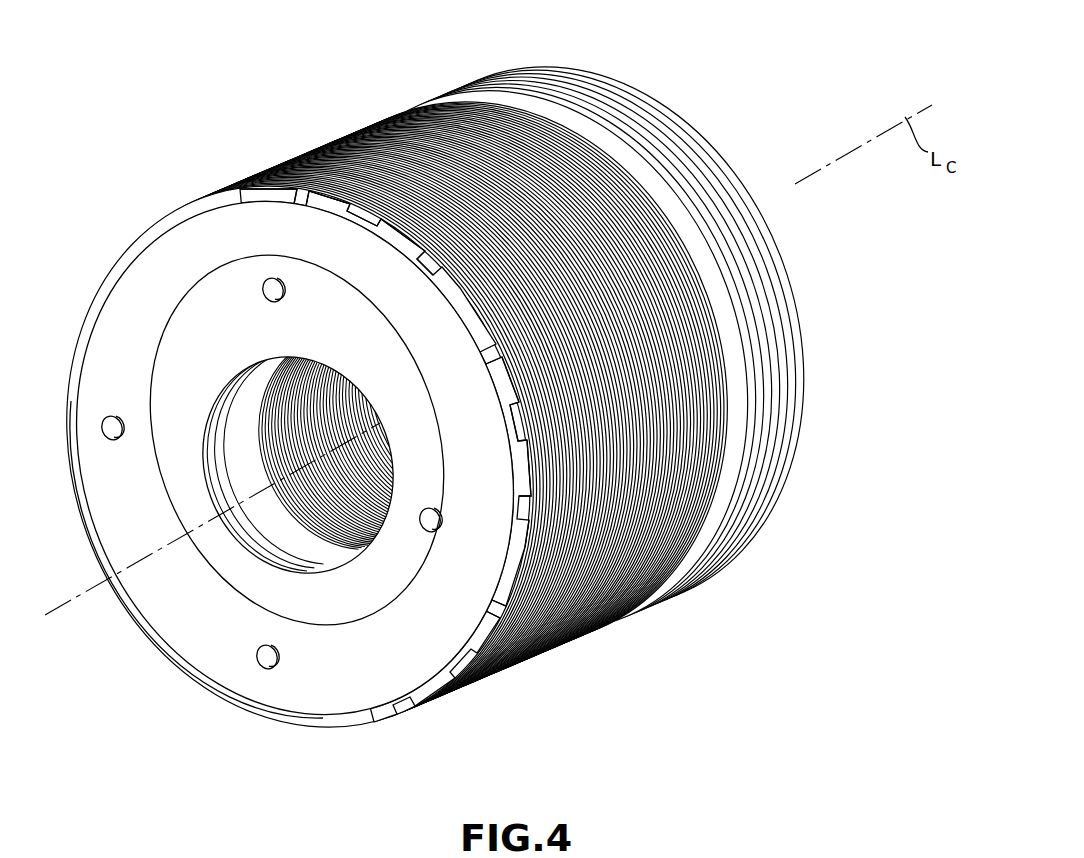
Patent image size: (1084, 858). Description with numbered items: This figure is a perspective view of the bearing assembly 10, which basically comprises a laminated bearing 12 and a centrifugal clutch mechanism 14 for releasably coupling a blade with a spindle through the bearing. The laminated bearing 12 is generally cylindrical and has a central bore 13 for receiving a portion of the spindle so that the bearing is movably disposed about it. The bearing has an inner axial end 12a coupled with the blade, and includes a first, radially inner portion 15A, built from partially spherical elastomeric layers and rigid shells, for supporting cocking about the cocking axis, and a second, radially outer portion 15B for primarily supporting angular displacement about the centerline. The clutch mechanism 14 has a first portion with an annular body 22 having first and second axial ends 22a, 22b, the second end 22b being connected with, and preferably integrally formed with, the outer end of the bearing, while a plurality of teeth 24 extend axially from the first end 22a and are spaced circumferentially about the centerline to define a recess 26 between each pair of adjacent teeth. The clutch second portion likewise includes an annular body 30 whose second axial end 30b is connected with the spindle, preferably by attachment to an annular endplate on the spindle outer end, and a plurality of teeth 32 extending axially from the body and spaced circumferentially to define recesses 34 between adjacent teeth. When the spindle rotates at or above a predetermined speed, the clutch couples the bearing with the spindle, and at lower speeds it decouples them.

The bearing assembly 10 is at (466, 398).
The laminated bearing 12 is at (440, 398).
The inner axial end 12a is at (553, 348).
The central bore 13 is at (247, 437).
The centrifugal clutch mechanism 14 is at (295, 457).
The radially inner portion 15A is at (752, 568).
The radially outer portion 15B is at (645, 625).
The annular body 22 is at (389, 411).
The first axial end 22a is at (250, 192).
The second axial end 22b is at (297, 190).
The teeth 24 is at (312, 220).
The recesses 26 is at (266, 212).
The annular body 30 is at (295, 457).
The second axial end 30b is at (315, 690).
The teeth 32 is at (390, 255).
The recesses 34 is at (360, 238).